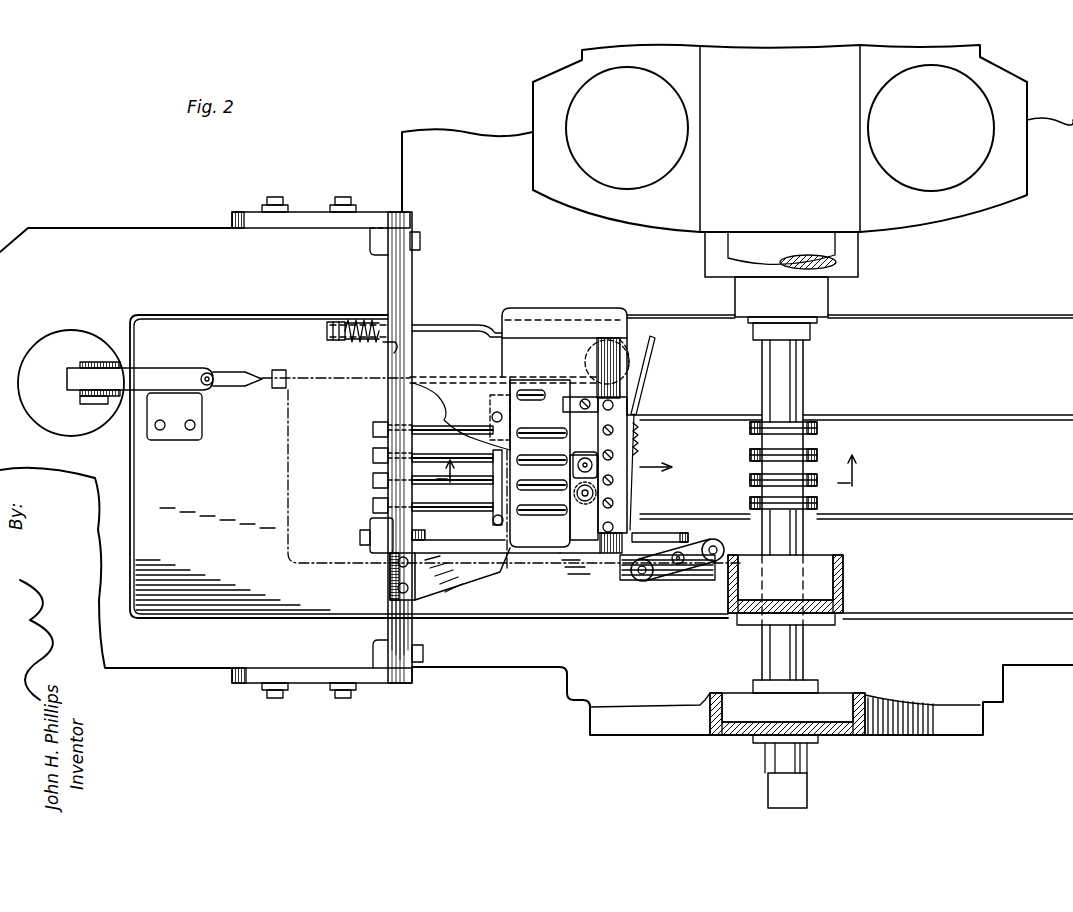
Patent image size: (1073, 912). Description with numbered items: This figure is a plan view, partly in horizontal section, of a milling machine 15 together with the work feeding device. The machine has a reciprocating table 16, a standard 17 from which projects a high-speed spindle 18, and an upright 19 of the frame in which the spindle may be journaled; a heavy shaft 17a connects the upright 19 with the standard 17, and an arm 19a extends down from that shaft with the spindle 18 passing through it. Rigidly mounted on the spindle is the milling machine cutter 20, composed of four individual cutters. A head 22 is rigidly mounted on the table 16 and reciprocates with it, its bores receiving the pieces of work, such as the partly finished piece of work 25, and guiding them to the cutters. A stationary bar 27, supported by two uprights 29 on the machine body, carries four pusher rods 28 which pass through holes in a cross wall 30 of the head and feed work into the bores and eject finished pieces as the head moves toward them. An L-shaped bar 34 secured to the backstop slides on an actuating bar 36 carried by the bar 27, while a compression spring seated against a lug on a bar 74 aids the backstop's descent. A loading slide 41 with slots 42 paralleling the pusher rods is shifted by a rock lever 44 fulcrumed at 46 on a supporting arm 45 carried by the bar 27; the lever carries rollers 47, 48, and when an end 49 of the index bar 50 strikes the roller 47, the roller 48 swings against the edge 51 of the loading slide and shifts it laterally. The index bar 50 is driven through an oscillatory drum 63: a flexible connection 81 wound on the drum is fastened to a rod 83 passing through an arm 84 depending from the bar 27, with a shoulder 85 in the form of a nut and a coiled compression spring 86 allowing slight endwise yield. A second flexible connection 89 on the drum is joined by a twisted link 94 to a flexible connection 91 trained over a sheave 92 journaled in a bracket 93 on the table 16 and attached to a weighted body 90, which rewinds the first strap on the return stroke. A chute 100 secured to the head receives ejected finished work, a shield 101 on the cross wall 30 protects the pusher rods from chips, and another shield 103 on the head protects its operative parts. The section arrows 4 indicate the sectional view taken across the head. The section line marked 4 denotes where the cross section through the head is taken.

The section line arrow 4 is at (649, 470).
The milling machine 15 is at (193, 668).
The reciprocating table 16 is at (850, 342).
The standard 17 is at (898, 232).
The heavy shaft 17a is at (728, 254).
The spindle 18 is at (805, 362).
The upright 19 is at (745, 737).
The arm 19a is at (845, 560).
The milling machine cutter 20 is at (757, 455).
The head 22 is at (645, 391).
The piece of work 25 is at (632, 503).
The stationary bar 27 is at (388, 266).
The pusher rods 28 is at (432, 484).
The uprights 29 is at (386, 683).
The cross wall 30 is at (493, 518).
The L-shaped bar 34 is at (565, 512).
The actuating bar 36 is at (690, 532).
The loading slide 41 is at (475, 604).
The slots 42 is at (538, 445).
The rock lever 44 is at (702, 578).
The supporting arm 45 is at (580, 575).
The fulcrum 46 is at (678, 566).
The roller 47 is at (725, 550).
The roller 48 is at (644, 582).
The end of index bar 49 is at (611, 553).
The index bar 50 is at (590, 362).
The edge of loading slide 51 is at (522, 548).
The oscillatory drum 63 is at (628, 345).
The bar 74 is at (612, 418).
The flexible connection 81 is at (545, 322).
The rod 83 is at (447, 330).
The arm 84 is at (375, 354).
The shoulder 85 is at (348, 322).
The coiled compression spring 86 is at (364, 320).
The second flexible connection 89 is at (298, 354).
The weighted body 90 is at (78, 430).
The flexible connection 91 is at (178, 372).
The sheave 92 is at (120, 372).
The bracket 93 is at (200, 402).
The twisted link 94 is at (247, 370).
The chute 100 is at (990, 520).
The shield 101 is at (478, 382).
The shield 103 is at (652, 348).